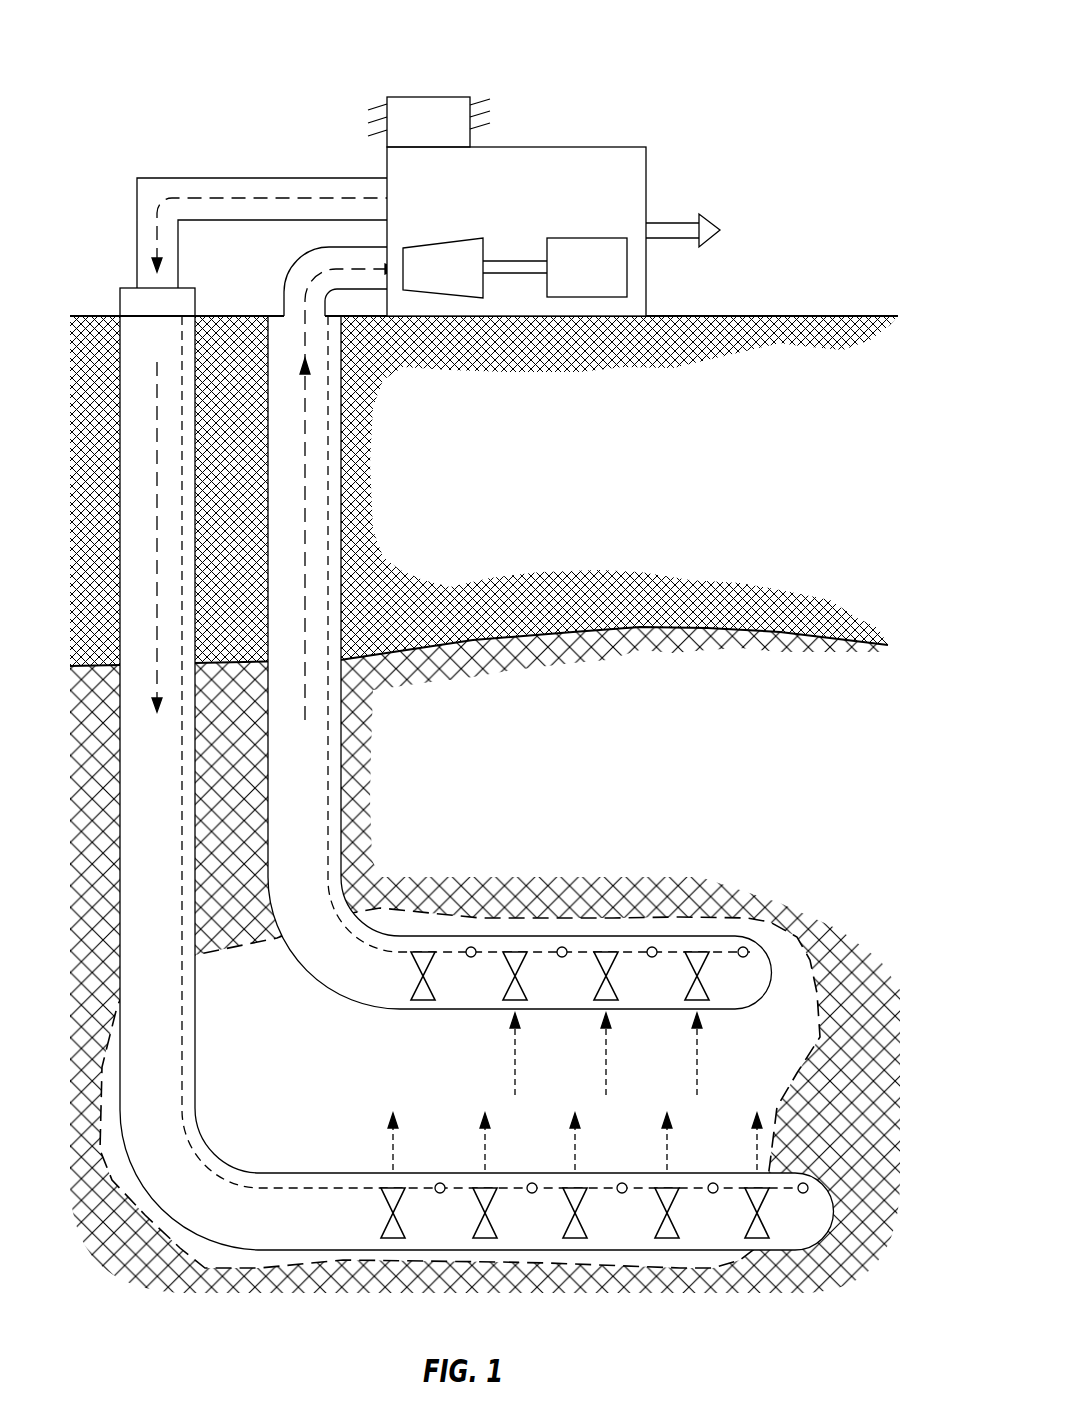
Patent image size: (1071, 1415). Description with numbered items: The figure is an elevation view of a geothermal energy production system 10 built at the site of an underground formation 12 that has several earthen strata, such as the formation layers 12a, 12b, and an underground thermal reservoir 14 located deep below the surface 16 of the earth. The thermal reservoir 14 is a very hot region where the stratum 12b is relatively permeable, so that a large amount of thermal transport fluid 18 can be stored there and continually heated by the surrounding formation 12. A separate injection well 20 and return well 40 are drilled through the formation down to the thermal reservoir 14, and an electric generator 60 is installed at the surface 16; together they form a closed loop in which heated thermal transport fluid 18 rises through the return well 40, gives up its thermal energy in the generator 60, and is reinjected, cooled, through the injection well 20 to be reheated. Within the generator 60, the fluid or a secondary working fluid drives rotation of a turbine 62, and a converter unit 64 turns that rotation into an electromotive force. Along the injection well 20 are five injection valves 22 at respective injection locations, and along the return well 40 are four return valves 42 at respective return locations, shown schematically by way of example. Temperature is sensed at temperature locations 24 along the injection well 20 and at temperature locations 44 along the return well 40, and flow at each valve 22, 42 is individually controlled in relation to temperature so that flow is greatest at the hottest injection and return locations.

The geothermal energy production system 10 is at (815, 53).
The underground formation 12 is at (485, 777).
The formation layer 12a is at (593, 370).
The formation layer 12b is at (598, 668).
The thermal reservoir 14 is at (697, 913).
The surface 16 is at (706, 316).
The thermal transport fluid 18 is at (157, 542).
The injection well 20 is at (120, 413).
The injection valves 22 is at (385, 1230).
The temperature locations 24 is at (533, 1194).
The return well 40 is at (341, 415).
The return valves 42 is at (417, 993).
The temperature locations 44 is at (563, 958).
The electric generator 60 is at (574, 190).
The turbine 62 is at (458, 289).
The converter unit 64 is at (602, 286).